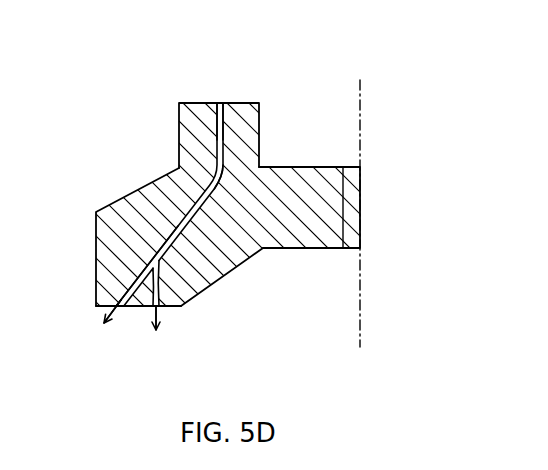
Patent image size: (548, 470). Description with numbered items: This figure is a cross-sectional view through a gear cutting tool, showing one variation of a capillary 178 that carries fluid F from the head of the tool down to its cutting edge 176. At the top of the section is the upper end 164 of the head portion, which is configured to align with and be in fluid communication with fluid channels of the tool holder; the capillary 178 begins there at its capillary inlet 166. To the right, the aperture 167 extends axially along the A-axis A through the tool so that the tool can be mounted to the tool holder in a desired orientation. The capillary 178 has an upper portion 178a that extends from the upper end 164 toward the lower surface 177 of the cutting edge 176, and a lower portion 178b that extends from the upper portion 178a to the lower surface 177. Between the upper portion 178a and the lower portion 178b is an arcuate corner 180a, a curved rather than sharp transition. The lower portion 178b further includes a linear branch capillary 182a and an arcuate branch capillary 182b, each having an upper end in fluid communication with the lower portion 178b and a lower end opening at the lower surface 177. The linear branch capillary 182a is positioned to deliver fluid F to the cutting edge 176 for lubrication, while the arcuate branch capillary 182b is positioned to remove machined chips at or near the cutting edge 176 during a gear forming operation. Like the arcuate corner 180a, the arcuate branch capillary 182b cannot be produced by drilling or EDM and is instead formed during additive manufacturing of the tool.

The upper end 164 is at (193, 102).
The capillary inlet 166 is at (220, 102).
The aperture 167 is at (352, 165).
The cutting edge 176 is at (95, 247).
The lower surface 177 is at (172, 308).
The capillary 178 is at (166, 228).
The upper portion 178a is at (123, 200).
The lower portion 178b is at (135, 306).
The arcuate corner 180a is at (226, 172).
The linear branch capillary 182a is at (100, 299).
The arcuate branch capillary 182b is at (165, 287).
The axis A is at (362, 85).
The fluid F is at (100, 313).